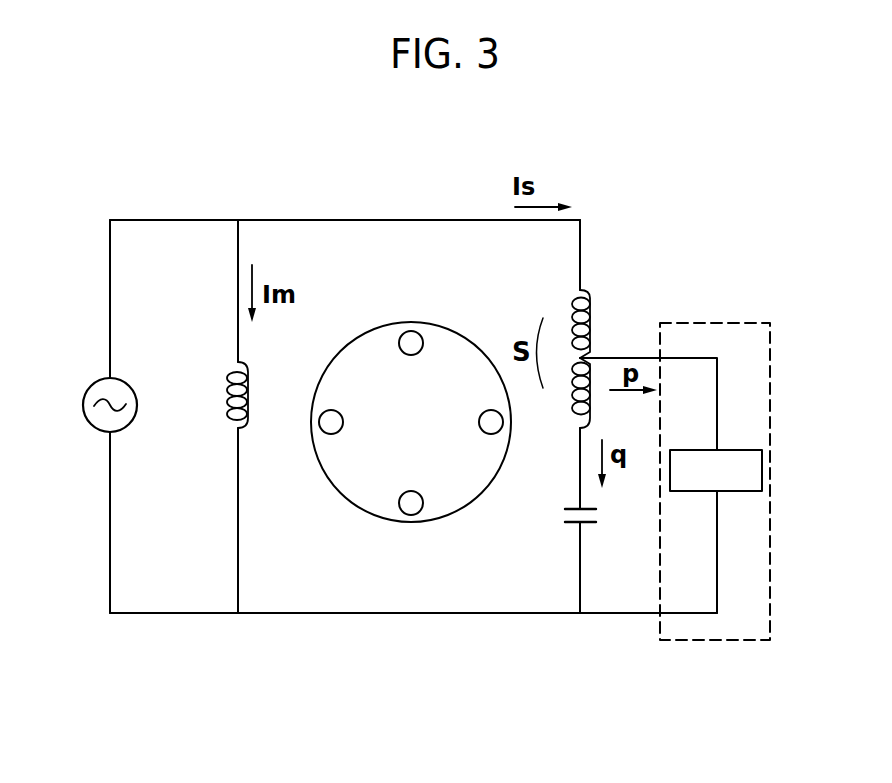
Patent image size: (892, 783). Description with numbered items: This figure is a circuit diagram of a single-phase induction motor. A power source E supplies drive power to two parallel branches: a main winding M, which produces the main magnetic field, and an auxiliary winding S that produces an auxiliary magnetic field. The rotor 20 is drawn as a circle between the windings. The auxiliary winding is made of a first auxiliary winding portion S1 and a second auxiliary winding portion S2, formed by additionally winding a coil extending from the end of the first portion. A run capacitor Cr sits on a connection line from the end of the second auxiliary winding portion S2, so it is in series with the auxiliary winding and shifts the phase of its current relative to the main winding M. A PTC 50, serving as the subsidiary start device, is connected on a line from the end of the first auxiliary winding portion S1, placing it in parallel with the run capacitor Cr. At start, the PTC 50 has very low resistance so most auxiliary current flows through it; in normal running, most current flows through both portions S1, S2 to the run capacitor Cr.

The rotor 20 is at (376, 478).
The PTC 50 is at (745, 450).
The power source E is at (91, 405).
The main winding M is at (220, 395).
The first auxiliary winding portion S1 is at (567, 324).
The second auxiliary winding portion S2 is at (567, 393).
The run capacitor Cr is at (559, 518).